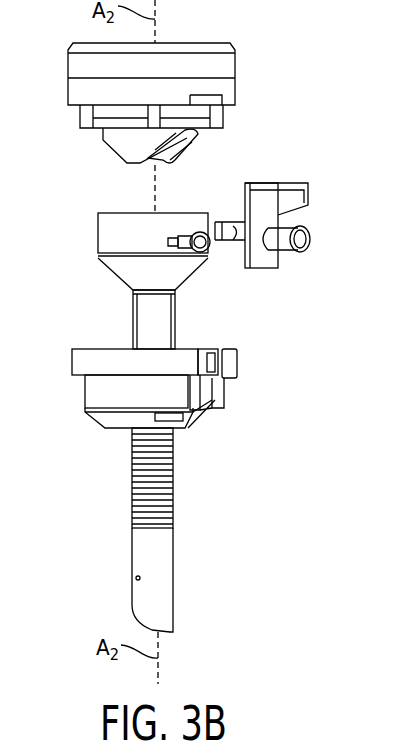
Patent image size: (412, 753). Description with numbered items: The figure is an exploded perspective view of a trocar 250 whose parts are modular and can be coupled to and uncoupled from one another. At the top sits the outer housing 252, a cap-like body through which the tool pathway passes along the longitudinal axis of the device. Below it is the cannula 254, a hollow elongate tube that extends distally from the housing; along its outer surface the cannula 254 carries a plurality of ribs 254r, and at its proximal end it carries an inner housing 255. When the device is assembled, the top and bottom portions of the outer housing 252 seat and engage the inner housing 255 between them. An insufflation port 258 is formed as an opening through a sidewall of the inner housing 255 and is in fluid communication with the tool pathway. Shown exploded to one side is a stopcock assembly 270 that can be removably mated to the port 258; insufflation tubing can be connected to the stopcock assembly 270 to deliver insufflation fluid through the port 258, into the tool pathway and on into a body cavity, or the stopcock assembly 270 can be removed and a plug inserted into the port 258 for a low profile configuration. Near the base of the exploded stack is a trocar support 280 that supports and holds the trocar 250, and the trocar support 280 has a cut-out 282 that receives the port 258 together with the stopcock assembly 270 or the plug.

The trocar 250 is at (322, 115).
The outer housing 252 is at (232, 62).
The cannula 254 is at (138, 330).
The ribs 254r is at (168, 497).
The inner housing 255 is at (104, 235).
The insufflation port 258 is at (205, 253).
The stopcock assembly 270 is at (303, 228).
The trocar support 280 is at (103, 418).
The cut-out 282 is at (192, 428).